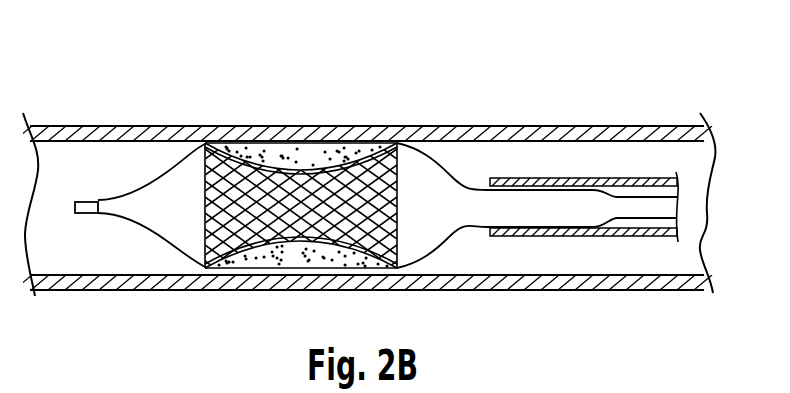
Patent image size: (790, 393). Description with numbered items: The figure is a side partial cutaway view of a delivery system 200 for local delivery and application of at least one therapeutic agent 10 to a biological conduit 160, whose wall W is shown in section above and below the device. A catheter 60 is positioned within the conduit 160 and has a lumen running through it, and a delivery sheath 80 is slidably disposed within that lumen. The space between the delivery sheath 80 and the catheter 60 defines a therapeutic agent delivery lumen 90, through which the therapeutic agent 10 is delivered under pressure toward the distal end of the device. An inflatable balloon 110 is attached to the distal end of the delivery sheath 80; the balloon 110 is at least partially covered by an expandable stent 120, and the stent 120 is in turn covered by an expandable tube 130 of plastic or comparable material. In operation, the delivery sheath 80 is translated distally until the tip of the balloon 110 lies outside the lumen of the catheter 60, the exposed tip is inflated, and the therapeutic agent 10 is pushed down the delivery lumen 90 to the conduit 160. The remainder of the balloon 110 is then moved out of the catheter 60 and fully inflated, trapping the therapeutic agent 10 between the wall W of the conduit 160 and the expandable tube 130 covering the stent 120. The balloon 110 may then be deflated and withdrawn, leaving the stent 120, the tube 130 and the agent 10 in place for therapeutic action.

The delivery system 200 is at (431, 101).
The therapeutic agent 10 is at (308, 150).
The inflatable balloon 110 is at (193, 157).
The expandable stent 120 is at (188, 197).
The expandable tube 130 is at (364, 148).
The biological conduit 160 is at (97, 155).
The catheter 60 is at (650, 238).
The delivery sheath 80 is at (677, 214).
The therapeutic agent delivery lumen 90 is at (676, 192).
The wall W is at (562, 127).